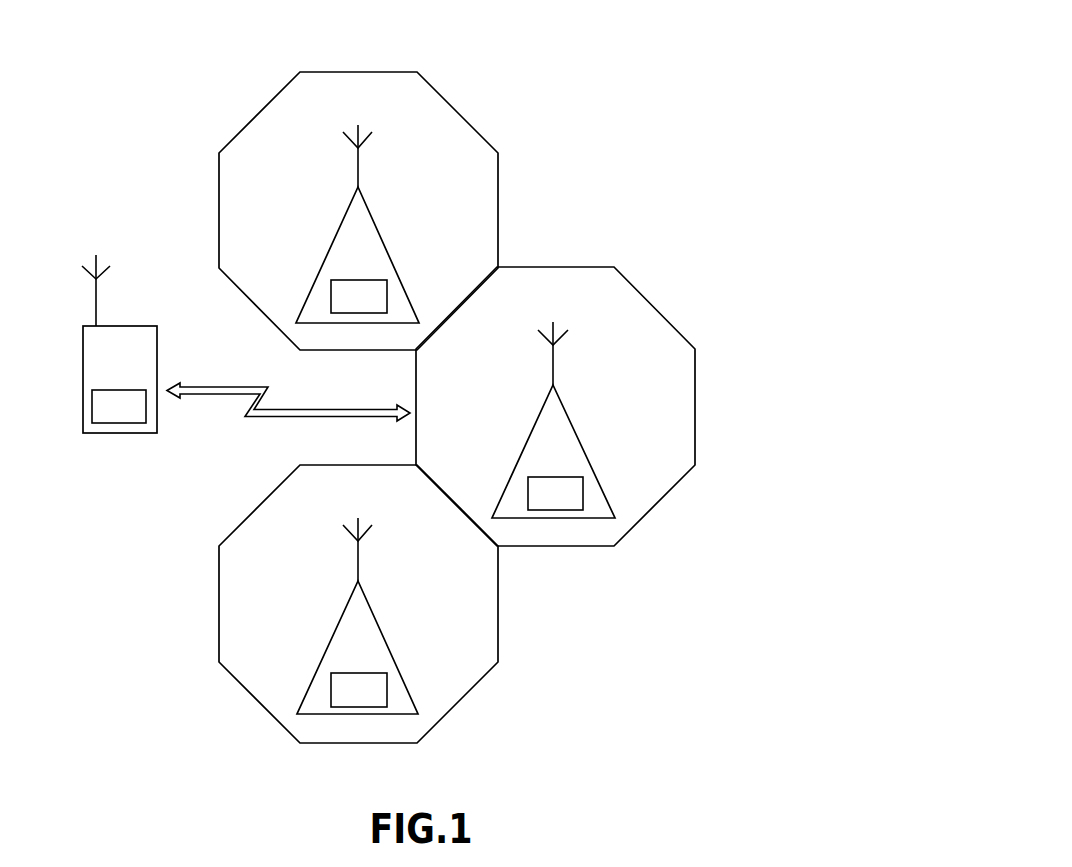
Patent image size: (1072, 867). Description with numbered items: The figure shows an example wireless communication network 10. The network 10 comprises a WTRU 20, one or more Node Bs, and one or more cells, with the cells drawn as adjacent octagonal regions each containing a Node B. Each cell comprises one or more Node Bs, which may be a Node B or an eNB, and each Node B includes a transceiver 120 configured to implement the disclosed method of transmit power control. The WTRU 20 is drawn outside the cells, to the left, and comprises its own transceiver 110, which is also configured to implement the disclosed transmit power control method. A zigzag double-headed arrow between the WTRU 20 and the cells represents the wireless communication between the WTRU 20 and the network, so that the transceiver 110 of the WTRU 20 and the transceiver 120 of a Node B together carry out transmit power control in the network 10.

The wireless communication network 10 is at (1013, 60).
The WTRU 20 is at (119, 344).
The transceiver 110 is at (119, 407).
The transceiver 120 is at (359, 690).